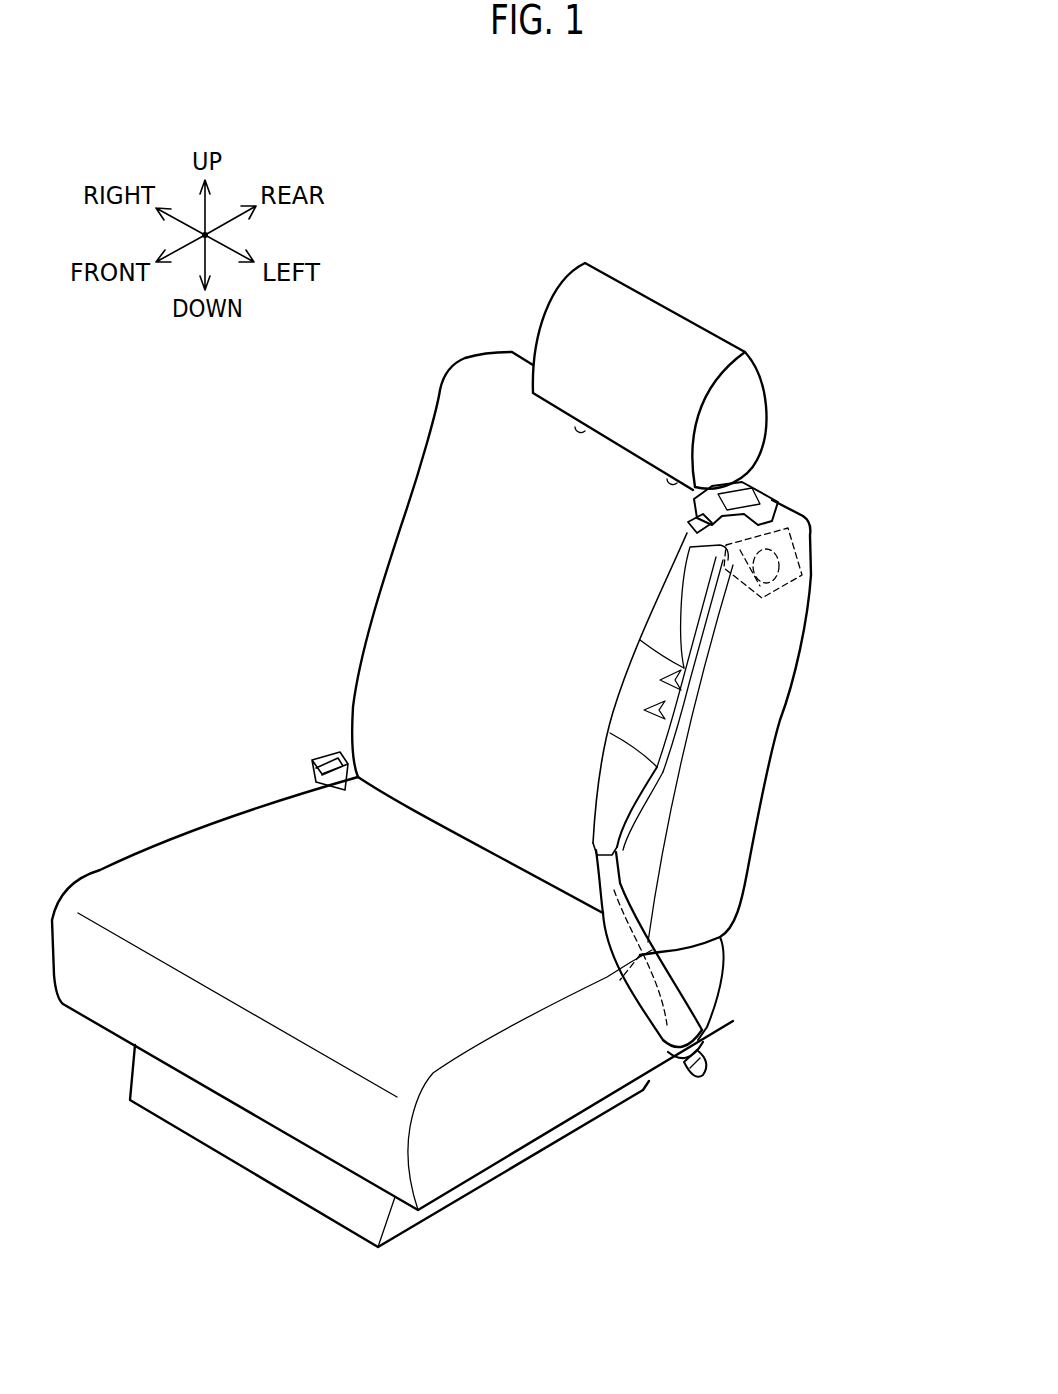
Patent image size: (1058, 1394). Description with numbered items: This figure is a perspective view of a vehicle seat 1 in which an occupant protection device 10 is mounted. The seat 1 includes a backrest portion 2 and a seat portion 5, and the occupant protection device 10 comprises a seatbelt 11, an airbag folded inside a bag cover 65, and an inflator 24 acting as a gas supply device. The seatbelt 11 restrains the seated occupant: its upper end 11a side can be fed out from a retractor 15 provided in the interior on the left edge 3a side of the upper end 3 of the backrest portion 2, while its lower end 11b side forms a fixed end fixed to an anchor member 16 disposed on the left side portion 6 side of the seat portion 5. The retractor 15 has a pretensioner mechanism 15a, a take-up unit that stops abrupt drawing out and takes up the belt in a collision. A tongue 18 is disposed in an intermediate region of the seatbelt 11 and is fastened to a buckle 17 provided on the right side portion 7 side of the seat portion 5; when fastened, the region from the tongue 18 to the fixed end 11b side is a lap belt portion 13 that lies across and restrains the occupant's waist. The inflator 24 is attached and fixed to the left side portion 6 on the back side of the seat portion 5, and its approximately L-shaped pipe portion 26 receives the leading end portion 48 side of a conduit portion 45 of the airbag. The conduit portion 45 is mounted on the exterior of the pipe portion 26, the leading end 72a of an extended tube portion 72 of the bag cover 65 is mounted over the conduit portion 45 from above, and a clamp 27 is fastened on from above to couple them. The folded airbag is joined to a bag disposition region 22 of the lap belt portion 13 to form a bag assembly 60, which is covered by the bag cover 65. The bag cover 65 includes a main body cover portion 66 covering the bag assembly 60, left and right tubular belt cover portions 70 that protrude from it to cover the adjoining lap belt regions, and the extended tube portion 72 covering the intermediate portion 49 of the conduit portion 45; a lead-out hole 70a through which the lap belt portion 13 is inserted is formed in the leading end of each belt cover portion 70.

The seat 1 is at (290, 478).
The backrest portion 2 is at (362, 601).
The upper end 3 is at (536, 588).
The left edge 3a is at (804, 482).
The seat portion 5 is at (186, 771).
The left side portion 6 is at (482, 1137).
The right side portion 7 is at (110, 826).
The occupant protection device 10 is at (748, 1187).
The seatbelt 11 is at (747, 537).
The upper end 11a is at (690, 664).
The lower end 11b is at (711, 988).
The lap belt portion 13 is at (620, 923).
The retractor 15 is at (792, 548).
The pretensioner mechanism 15a is at (782, 570).
The anchor member 16 is at (765, 988).
The buckle 17 is at (320, 757).
The tongue 18 is at (700, 503).
The bag disposition region 22 is at (667, 710).
The inflator 24 is at (704, 1074).
The pipe portion 26 is at (767, 1130).
The clamp 27 is at (703, 1031).
The conduit portion 45 is at (667, 1025).
The leading end portion 48 is at (704, 1049).
The intermediate portion 49 is at (668, 1050).
The bag assembly 60 is at (684, 680).
The bag cover 65 is at (482, 562).
The main body cover portion 66 is at (642, 682).
The belt cover portions 70 is at (673, 588).
The lead-out hole 70a is at (685, 532).
The extended tube portion 72 is at (668, 1025).
The leading end 72a is at (704, 1043).